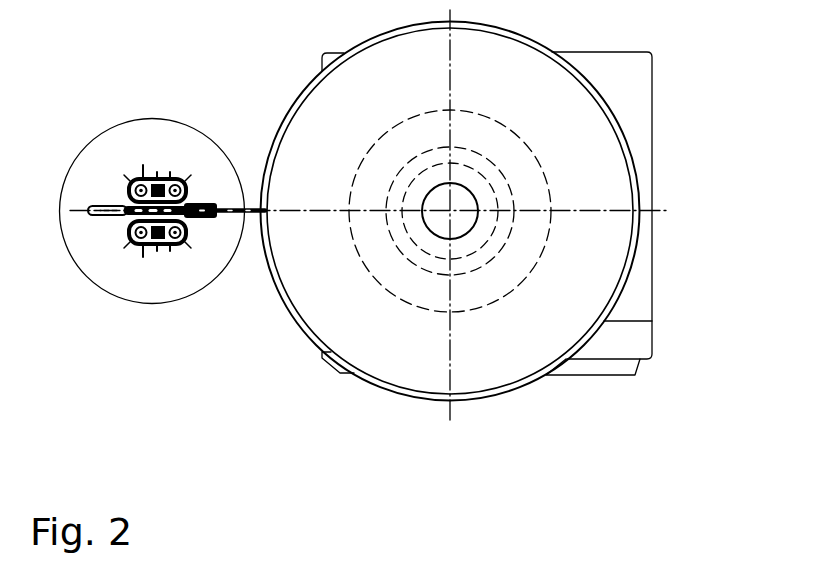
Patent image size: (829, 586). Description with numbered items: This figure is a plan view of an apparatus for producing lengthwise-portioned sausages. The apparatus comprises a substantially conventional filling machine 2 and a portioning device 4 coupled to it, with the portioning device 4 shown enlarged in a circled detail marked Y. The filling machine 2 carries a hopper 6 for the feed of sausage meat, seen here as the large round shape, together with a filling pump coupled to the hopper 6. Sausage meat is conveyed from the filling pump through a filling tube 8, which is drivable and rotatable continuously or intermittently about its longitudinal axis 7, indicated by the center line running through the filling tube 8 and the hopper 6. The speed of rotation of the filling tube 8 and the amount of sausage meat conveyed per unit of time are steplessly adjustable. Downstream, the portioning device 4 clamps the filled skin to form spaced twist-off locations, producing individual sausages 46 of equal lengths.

The filling machine 2 is at (672, 340).
The portioning device 4 is at (134, 334).
The hopper 6 is at (413, 372).
The longitudinal axis 7 is at (290, 209).
The filling tube 8 is at (255, 211).
The sausages 46 is at (110, 203).
The detail Y is at (148, 118).